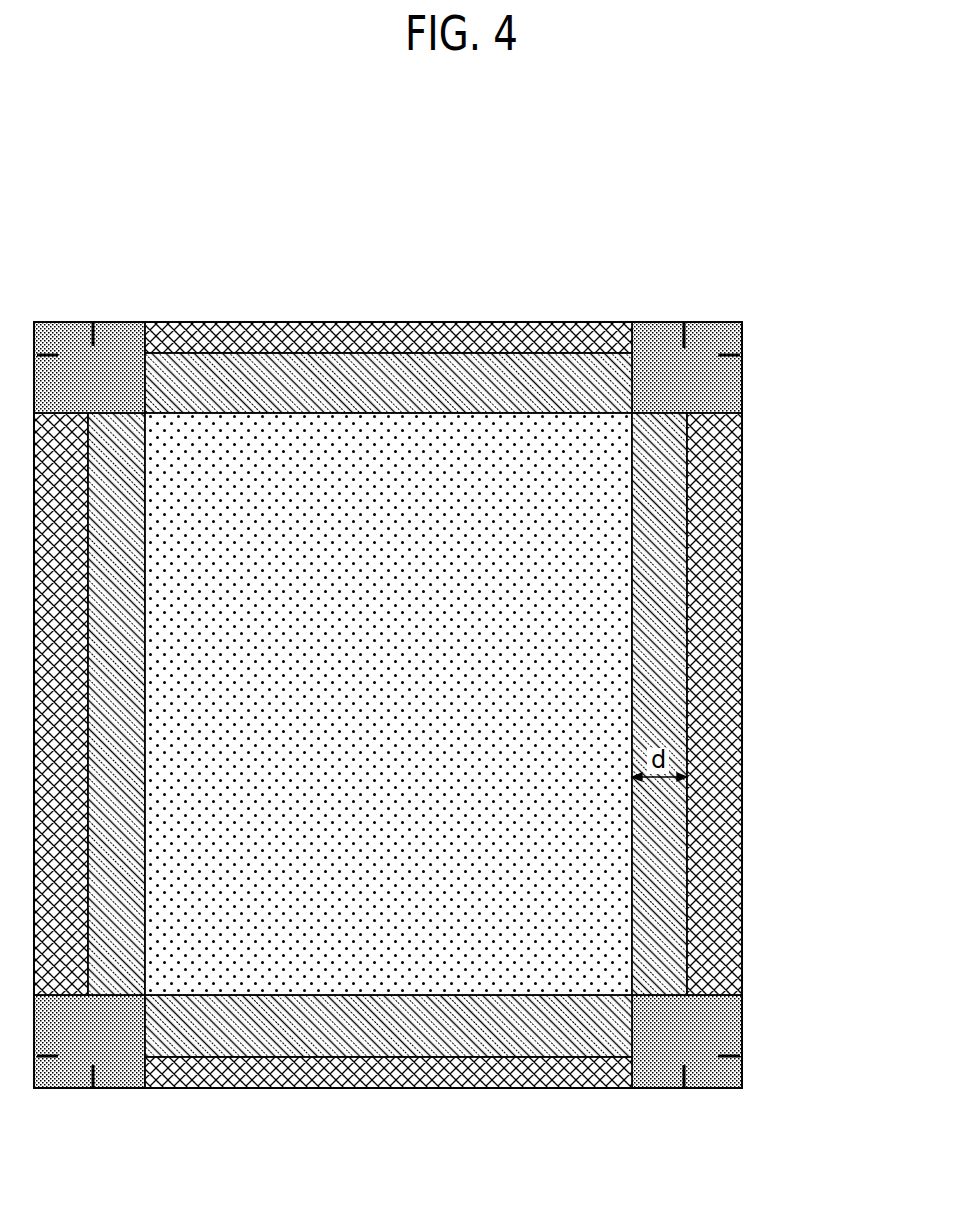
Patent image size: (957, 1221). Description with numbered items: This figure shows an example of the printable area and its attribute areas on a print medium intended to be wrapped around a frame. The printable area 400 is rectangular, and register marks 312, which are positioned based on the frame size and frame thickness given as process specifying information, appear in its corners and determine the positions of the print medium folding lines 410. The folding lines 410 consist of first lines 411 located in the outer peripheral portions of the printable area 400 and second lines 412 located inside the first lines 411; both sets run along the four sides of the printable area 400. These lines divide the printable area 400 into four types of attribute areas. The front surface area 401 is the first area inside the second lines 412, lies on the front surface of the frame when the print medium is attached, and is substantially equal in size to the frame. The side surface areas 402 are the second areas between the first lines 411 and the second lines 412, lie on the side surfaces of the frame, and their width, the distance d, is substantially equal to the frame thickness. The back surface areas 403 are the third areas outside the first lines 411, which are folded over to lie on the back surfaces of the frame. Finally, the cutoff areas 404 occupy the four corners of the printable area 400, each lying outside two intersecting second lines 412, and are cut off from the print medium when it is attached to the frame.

The printable area 400 is at (570, 233).
The front surface area 401 is at (455, 447).
The side surface areas 402 is at (282, 372).
The back surface areas 403 is at (205, 336).
The cutoff areas 404 is at (118, 336).
The register marks 312 is at (706, 336).
The folding lines 410 is at (818, 450).
The first lines 411 is at (597, 1056).
The second lines 412 is at (597, 413).